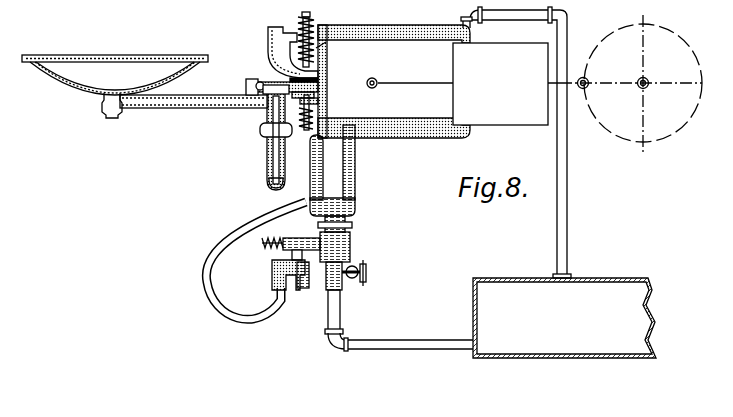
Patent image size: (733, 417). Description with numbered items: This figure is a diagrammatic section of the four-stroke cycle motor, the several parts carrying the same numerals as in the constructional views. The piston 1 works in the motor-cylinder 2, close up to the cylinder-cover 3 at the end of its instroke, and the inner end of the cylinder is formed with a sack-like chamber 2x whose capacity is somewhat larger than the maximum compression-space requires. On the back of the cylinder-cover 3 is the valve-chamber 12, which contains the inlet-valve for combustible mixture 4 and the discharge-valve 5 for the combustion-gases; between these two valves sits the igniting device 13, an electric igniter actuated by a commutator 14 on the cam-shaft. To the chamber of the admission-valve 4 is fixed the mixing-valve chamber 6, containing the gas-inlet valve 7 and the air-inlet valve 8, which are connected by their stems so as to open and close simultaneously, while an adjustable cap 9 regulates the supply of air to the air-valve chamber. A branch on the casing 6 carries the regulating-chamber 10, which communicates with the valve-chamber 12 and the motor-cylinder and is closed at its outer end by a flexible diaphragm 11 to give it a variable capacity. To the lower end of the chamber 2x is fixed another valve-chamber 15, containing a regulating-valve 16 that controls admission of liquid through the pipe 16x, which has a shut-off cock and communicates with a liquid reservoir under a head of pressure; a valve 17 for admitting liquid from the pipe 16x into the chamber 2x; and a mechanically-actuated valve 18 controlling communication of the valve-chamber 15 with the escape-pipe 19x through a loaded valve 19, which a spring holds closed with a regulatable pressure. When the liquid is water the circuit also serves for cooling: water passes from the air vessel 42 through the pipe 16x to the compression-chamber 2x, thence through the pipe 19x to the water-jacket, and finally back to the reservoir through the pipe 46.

The piston 1 is at (439, 81).
The motor-cylinder 2 is at (500, 84).
The sack-like chamber 2x is at (332, 170).
The cylinder-cover 3 is at (317, 108).
The inlet-valve for combustible mixture 4 is at (326, 104).
The discharge-valve 5 is at (322, 66).
The mixing-valve chamber 6 is at (261, 130).
The gas-inlet valve 7 is at (258, 86).
The air-inlet valve 8 is at (268, 143).
The adjustable cap 9 is at (270, 181).
The regulating-chamber 10 is at (115, 90).
The flexible diaphragm 11 is at (128, 54).
The valve-chamber 12 is at (325, 99).
The igniting device 13 is at (288, 77).
The commutator 14 is at (631, 83).
The valve-chamber 15 is at (344, 232).
The regulating-valve 16 is at (342, 280).
The liquid-supply pipe 16x is at (341, 332).
The liquid-admission valve 17 is at (328, 300).
The mechanically-actuated valve 18 is at (320, 246).
The loaded valve 19 is at (290, 268).
The escape-pipe 19x is at (219, 305).
The air vessel 42 is at (564, 318).
The return pipe 46 is at (522, 16).